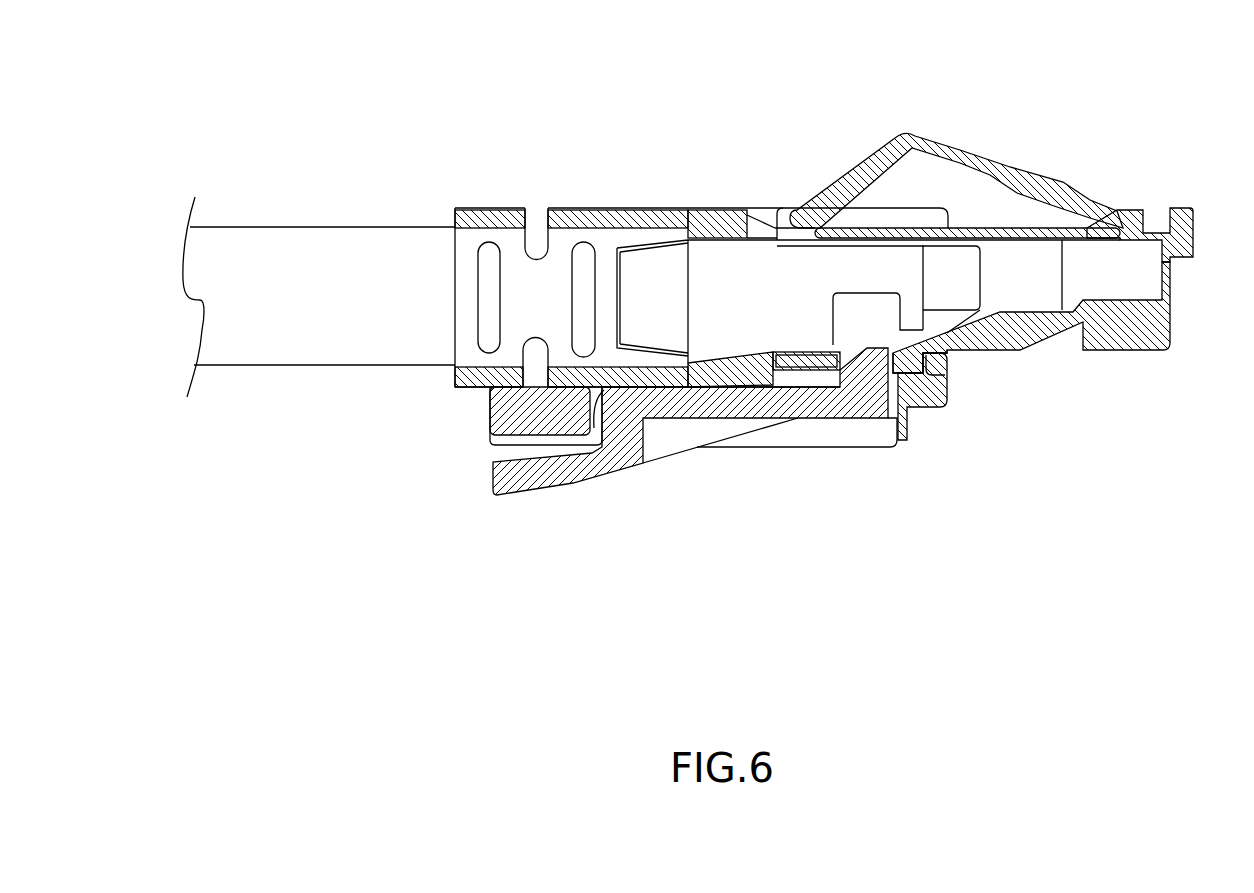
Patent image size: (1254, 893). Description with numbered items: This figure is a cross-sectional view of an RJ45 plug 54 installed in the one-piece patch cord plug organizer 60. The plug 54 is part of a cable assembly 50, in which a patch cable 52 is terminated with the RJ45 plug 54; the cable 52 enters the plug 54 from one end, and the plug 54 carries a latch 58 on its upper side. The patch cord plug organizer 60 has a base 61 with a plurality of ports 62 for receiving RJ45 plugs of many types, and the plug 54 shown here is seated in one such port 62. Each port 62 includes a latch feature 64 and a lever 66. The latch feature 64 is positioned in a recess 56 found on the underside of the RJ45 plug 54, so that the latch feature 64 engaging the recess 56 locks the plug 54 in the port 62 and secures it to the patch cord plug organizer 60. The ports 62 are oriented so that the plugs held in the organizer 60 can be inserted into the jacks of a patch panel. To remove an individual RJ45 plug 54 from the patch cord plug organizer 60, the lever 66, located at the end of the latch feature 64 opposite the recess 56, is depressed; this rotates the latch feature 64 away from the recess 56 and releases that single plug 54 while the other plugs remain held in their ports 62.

The cable assembly 50 is at (500, 112).
The patch cable 52 is at (322, 227).
The RJ45 plug 54 is at (1140, 208).
The recess 56 is at (847, 363).
The latch 58 is at (1035, 183).
The patch cord plug organizer 60 is at (920, 397).
The base 61 is at (933, 383).
The port 62 is at (943, 352).
The latch feature 64 is at (870, 368).
The lever 66 is at (528, 468).